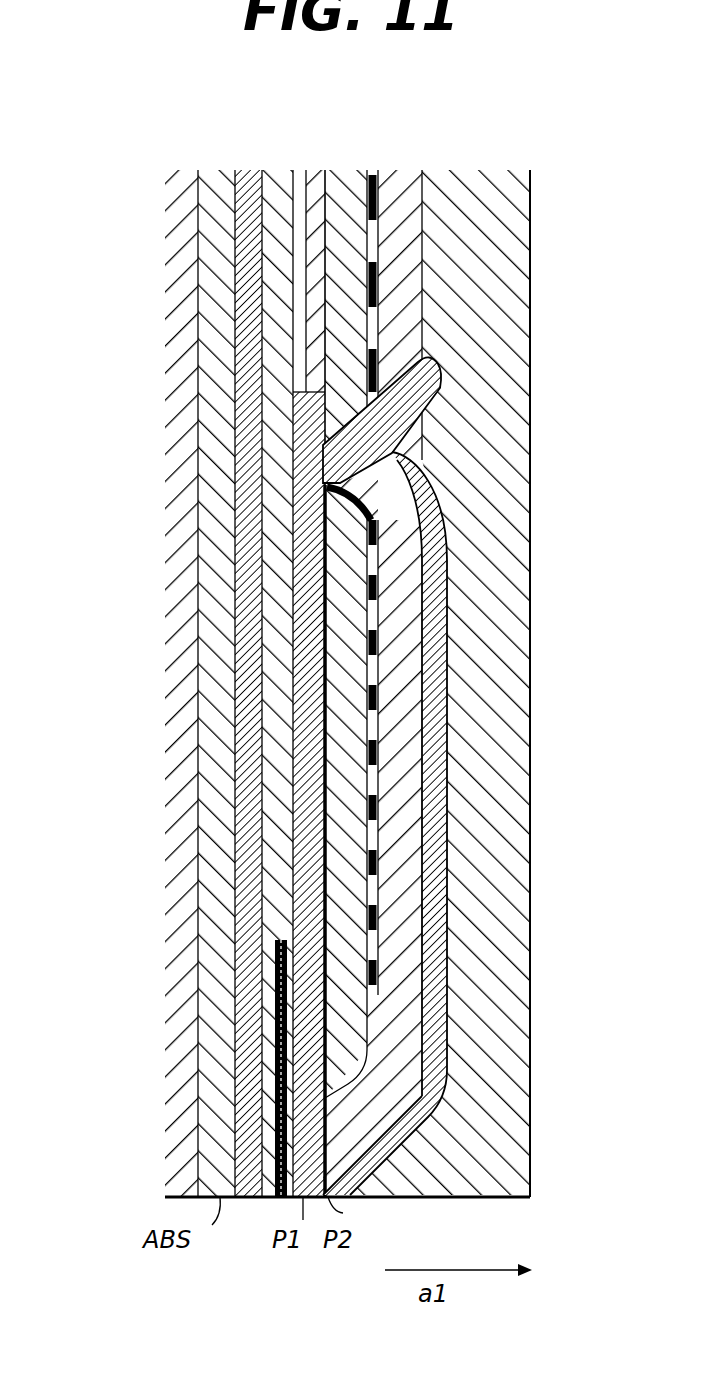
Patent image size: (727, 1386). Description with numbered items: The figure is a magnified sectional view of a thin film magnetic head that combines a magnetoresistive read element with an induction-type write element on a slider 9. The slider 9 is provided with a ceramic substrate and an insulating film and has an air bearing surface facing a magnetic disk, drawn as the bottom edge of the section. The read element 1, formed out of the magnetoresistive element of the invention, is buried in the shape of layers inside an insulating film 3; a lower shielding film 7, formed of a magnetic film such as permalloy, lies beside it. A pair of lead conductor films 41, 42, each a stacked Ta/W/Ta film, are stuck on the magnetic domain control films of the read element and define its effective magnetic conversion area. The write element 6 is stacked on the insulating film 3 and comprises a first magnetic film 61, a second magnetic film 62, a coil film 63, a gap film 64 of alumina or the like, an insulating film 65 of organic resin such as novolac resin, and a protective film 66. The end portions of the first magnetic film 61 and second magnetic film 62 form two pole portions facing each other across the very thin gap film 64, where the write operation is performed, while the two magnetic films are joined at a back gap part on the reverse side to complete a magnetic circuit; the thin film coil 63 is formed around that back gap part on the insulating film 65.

The read element 1 is at (273, 1140).
The insulating film 3 is at (265, 666).
The write element 6 is at (413, 1080).
The lower shielding film 7 is at (245, 765).
The slider 9 is at (183, 170).
The lead conductor film 41 is at (280, 975).
The lead conductor film 42 is at (280, 975).
The first magnetic film 61 is at (305, 585).
The second magnetic film 62 is at (447, 665).
The coil film 63 is at (342, 950).
The gap film 64 is at (305, 506).
The insulating film 65 is at (395, 838).
The protective film 66 is at (490, 492).